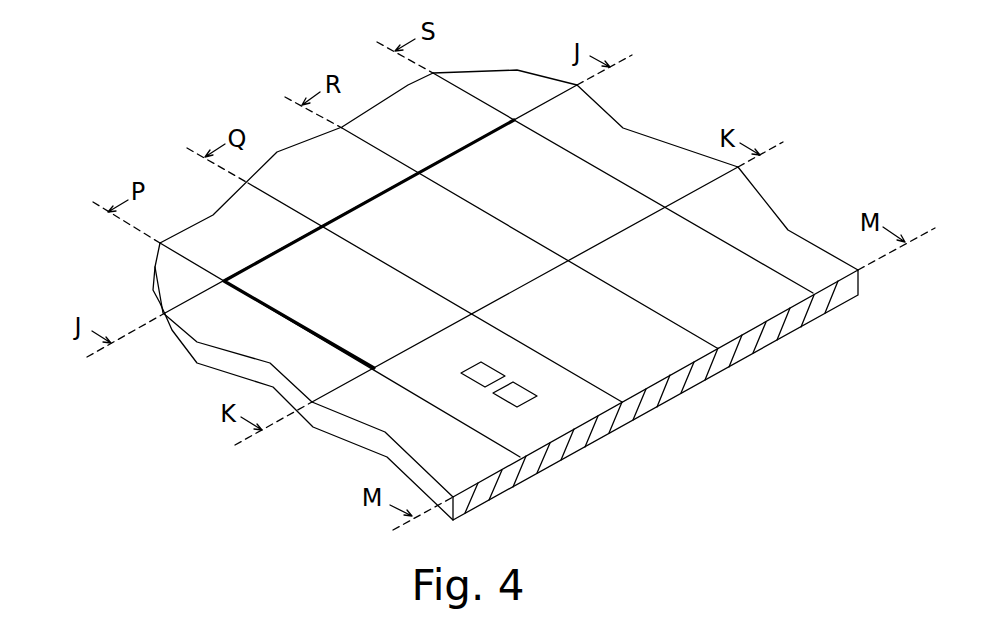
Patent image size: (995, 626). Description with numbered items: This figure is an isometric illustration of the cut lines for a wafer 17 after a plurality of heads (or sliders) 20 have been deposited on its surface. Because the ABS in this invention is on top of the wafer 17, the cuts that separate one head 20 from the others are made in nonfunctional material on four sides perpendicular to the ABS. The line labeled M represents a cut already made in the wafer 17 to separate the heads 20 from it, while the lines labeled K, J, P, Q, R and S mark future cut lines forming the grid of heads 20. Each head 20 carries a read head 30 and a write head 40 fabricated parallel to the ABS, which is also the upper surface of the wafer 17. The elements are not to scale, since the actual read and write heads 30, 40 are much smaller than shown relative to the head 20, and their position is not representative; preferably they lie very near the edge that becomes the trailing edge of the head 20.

The wafer 17 is at (686, 76).
The head 20 is at (323, 320).
The read head 30 is at (523, 400).
The write head 40 is at (472, 369).